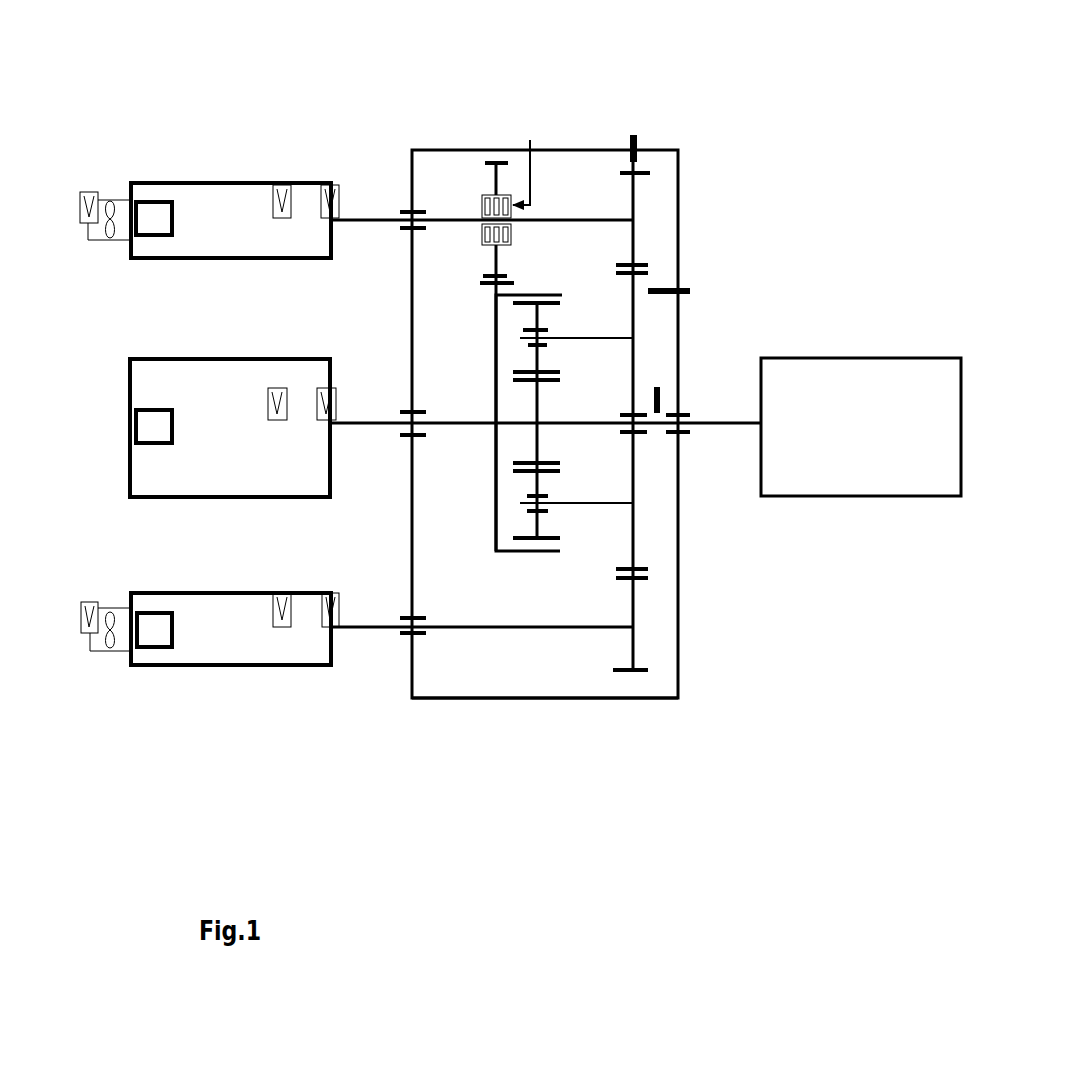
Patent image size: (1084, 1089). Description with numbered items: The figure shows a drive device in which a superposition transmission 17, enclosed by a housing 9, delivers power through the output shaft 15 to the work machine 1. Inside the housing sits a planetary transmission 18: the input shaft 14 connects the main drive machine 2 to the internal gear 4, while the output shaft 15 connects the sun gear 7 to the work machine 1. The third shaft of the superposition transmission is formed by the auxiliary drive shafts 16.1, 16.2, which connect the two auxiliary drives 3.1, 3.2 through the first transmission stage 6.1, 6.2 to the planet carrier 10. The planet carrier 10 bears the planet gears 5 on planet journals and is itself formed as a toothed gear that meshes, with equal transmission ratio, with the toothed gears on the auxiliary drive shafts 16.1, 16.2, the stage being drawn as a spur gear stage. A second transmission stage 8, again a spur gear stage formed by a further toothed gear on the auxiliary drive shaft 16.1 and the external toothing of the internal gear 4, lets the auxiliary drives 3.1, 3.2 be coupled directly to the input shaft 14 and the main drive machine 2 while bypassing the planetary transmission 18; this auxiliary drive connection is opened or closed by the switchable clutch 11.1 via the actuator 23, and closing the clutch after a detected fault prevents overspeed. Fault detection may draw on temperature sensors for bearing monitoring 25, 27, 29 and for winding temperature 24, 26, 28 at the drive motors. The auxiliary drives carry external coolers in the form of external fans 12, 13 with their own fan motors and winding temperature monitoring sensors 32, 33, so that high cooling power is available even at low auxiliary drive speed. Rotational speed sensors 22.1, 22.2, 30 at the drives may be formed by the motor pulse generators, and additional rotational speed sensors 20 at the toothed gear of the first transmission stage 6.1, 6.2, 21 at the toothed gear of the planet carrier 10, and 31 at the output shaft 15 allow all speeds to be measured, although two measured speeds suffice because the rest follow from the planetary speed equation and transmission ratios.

The work machine 1 is at (918, 358).
The main drive machine 2 is at (190, 359).
The auxiliary drive 3.1 is at (225, 183).
The auxiliary drive 3.2 is at (295, 665).
The internal gear 4 is at (497, 348).
The planet gears 5 is at (540, 522).
The first transmission stage 6.1 is at (637, 195).
The first transmission stage 6.2 is at (636, 645).
The sun gear 7 is at (542, 397).
The second transmission stage 8 is at (502, 160).
The housing 9 is at (655, 698).
The planet carrier 10 is at (636, 553).
The switchable clutch 11.1 is at (480, 195).
The external fan 12 is at (117, 200).
The external fan 13 is at (110, 648).
The input shaft 14 is at (377, 427).
The output shaft 15 is at (712, 425).
The auxiliary drive shaft 16.1 is at (380, 215).
The auxiliary drive shaft 16.2 is at (362, 627).
The superposition transmission 17 is at (558, 712).
The planetary transmission 18 is at (512, 568).
The rotational speed sensor 20 is at (636, 135).
The rotational speed sensor 21 is at (690, 291).
The rotational speed sensor 22.1 is at (157, 200).
The rotational speed sensor 22.2 is at (150, 647).
The actuator 23 is at (533, 163).
The temperature sensor for monitoring the winding temperature 24 is at (280, 185).
The temperature sensor for bearing monitoring 25 is at (327, 185).
The temperature sensor for monitoring the winding temperature 26 is at (275, 388).
The temperature sensor for bearing monitoring 27 is at (322, 388).
The temperature sensor for monitoring the winding temperature 28 is at (277, 593).
The temperature sensor for bearing monitoring 29 is at (328, 593).
The rotational speed sensor 30 is at (145, 410).
The rotational speed sensor 31 is at (657, 387).
The monitoring sensor for the winding temperature 32 is at (86, 190).
The monitoring sensor for the winding temperature 33 is at (88, 602).